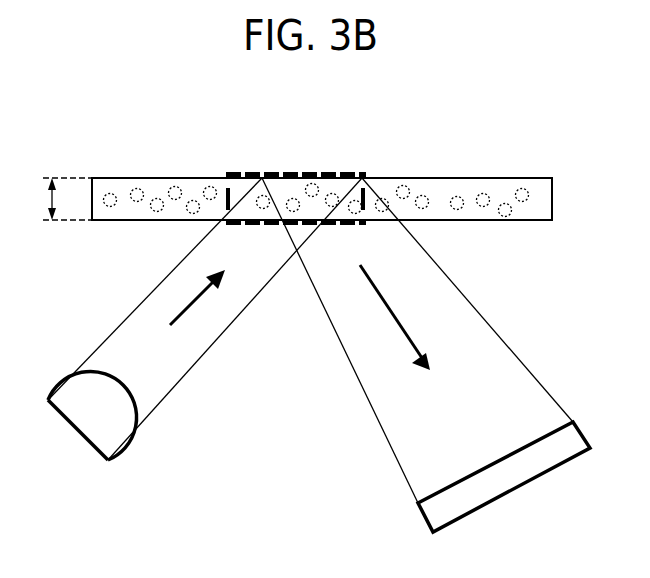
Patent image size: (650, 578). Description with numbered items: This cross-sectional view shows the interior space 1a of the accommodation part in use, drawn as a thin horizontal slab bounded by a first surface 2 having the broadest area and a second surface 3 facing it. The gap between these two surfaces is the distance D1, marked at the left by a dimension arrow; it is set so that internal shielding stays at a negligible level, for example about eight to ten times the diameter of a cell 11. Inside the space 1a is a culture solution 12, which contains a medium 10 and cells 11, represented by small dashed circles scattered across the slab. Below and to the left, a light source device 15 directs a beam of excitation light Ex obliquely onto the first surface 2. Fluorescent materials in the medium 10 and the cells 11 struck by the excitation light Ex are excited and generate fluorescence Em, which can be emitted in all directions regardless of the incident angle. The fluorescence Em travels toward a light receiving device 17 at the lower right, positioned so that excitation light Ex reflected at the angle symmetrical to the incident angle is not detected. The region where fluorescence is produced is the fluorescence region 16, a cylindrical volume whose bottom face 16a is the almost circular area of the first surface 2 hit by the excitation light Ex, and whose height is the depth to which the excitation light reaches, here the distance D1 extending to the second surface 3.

The space 1a is at (156, 173).
The first surface 2 is at (176, 222).
The second surface 3 is at (195, 177).
The medium 10 is at (407, 177).
The cell 11 is at (440, 177).
The culture solution 12 is at (473, 122).
The light source device 15 is at (86, 420).
The fluorescence region 16 is at (300, 172).
The bottom face 16a is at (227, 223).
The light receiving device 17 is at (517, 473).
The distance D1 is at (53, 199).
The excitation light Ex is at (125, 342).
The fluorescence Em is at (493, 343).